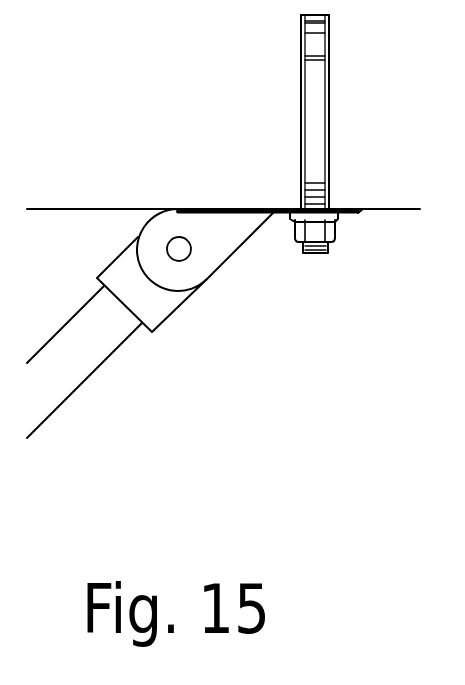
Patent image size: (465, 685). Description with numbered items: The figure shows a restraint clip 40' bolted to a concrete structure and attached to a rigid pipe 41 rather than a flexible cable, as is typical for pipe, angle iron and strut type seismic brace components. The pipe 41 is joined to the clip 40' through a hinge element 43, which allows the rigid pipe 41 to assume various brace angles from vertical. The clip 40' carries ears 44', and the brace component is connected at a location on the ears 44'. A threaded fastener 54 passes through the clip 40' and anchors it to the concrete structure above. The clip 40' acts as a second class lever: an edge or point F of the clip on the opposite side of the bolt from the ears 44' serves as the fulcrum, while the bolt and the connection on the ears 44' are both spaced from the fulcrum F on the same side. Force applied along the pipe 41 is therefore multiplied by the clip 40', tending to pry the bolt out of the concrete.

The threaded rod / bolt 54 is at (330, 82).
The fulcrum F is at (371, 208).
The restraint clip 40' is at (234, 254).
The ears 44' is at (213, 317).
The hinge element 43 is at (122, 268).
The pipe 41 is at (85, 382).